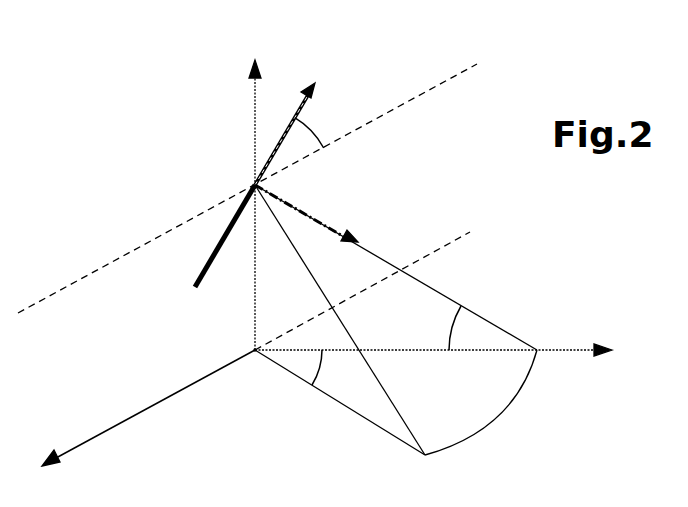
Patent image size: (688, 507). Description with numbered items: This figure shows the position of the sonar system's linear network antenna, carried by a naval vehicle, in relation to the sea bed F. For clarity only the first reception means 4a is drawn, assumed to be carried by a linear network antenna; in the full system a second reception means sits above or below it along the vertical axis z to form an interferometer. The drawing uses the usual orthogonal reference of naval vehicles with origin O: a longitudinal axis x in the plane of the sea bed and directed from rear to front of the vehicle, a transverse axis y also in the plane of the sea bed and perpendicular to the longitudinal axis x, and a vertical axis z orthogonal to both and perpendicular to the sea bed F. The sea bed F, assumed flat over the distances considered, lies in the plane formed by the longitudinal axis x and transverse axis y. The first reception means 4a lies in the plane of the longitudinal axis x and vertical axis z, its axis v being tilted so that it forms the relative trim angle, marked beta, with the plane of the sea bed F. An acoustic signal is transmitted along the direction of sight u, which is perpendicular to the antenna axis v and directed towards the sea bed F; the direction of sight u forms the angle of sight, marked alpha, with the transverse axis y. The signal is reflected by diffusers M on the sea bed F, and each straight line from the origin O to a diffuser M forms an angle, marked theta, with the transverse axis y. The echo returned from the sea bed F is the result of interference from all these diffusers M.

The first reception means 4a is at (212, 248).
The longitudinal axis x is at (137, 416).
The transverse axis y is at (444, 352).
The vertical axis z is at (254, 191).
The origin O is at (242, 336).
The diffuser M is at (479, 420).
The sea bed F is at (327, 409).
The direction of sight u is at (306, 213).
The axis of the reception means v is at (291, 120).